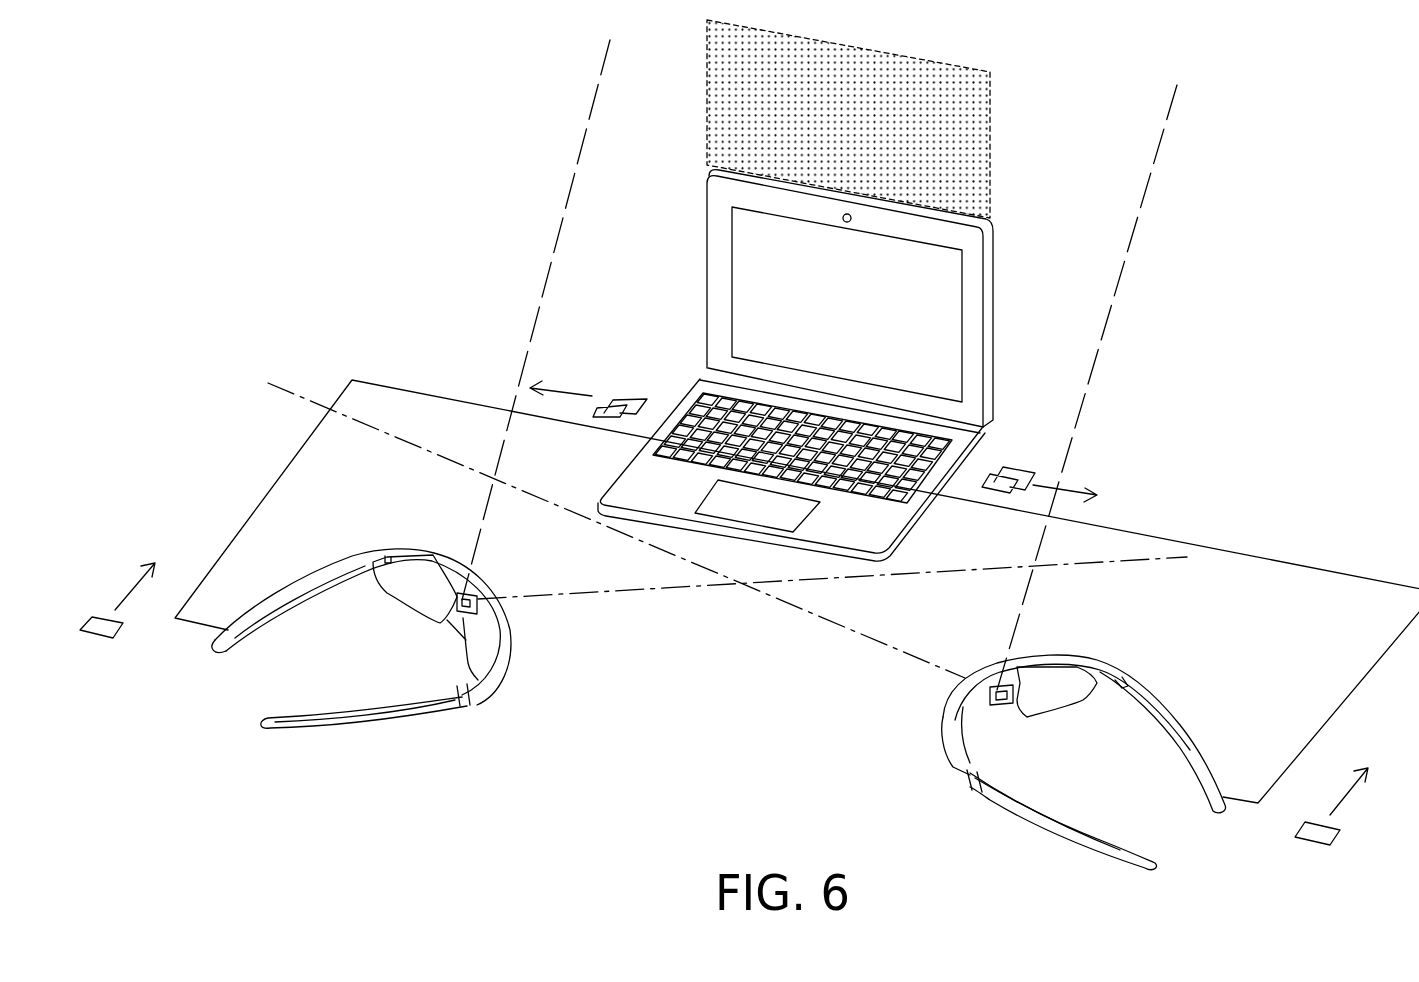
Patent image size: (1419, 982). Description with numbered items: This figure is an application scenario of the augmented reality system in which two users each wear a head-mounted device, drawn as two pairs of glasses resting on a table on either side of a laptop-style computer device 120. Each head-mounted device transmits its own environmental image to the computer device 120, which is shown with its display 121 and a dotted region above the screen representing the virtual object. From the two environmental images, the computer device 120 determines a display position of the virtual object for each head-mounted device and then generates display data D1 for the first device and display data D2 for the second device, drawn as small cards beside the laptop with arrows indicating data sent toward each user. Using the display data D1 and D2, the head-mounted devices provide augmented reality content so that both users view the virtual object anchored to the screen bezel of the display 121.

The display 121 is at (905, 242).
The computer device 120 is at (990, 262).
The display data D1 is at (622, 396).
The display data D2 is at (1018, 466).